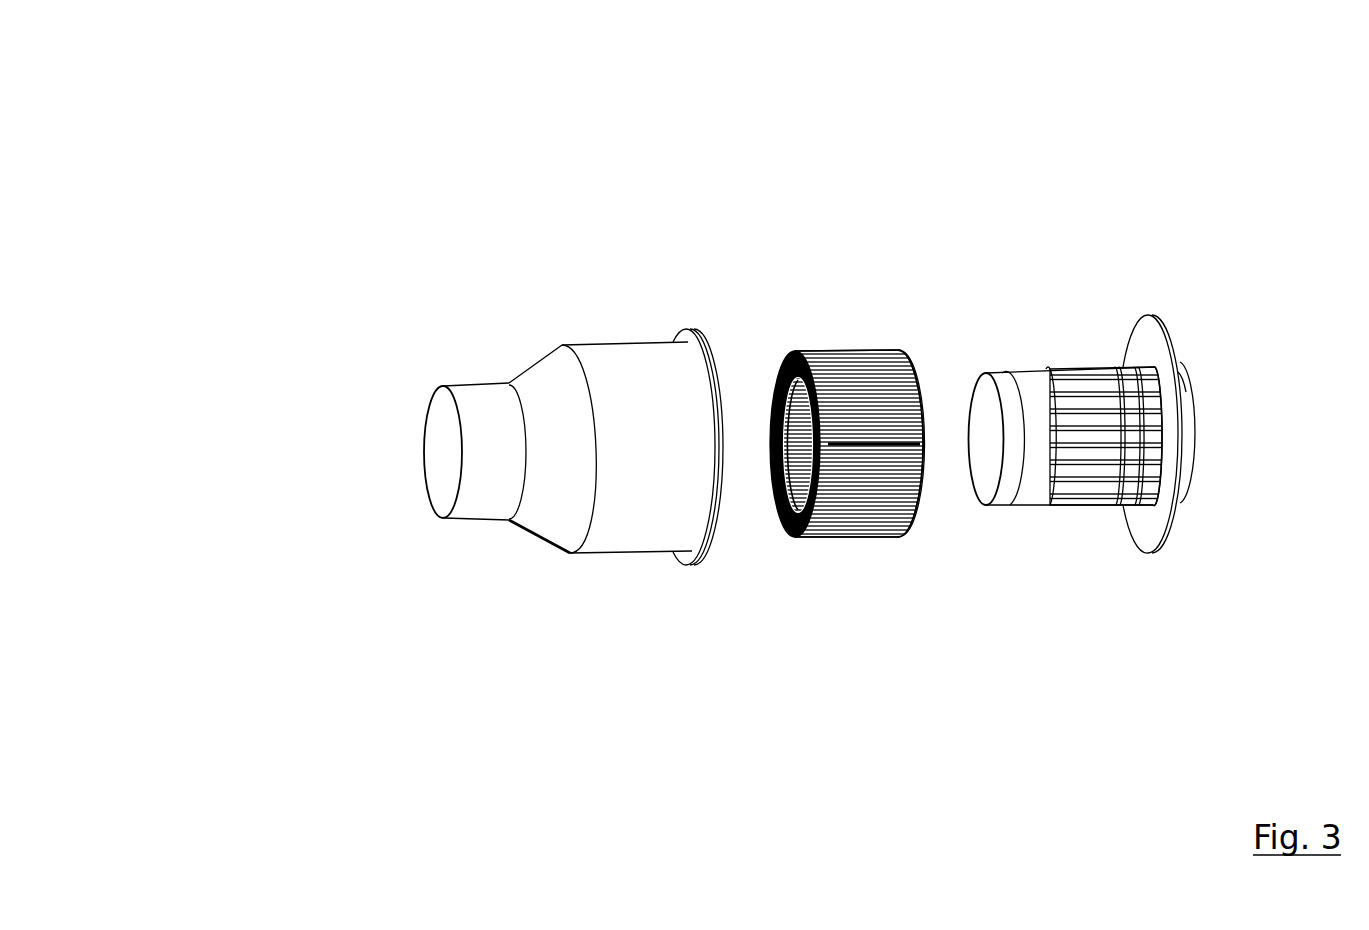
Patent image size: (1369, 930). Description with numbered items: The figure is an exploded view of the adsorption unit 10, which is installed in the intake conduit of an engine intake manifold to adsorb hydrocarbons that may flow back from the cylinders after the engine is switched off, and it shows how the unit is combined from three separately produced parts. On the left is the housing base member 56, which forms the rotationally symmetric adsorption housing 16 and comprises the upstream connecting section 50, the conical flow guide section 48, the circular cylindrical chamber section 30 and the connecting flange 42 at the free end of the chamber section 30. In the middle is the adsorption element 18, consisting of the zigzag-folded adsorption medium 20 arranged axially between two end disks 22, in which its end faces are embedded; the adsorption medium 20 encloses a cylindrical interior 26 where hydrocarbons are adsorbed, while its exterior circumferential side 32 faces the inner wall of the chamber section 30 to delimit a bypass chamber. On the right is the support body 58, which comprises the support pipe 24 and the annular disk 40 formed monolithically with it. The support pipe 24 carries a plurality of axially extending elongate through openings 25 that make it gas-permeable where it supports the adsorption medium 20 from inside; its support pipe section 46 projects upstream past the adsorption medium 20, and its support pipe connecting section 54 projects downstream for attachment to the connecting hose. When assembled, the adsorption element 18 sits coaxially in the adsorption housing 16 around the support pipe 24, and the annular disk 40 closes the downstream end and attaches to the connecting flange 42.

The adsorption unit 10 is at (214, 110).
The adsorption housing 16 is at (558, 307).
The adsorption element 18 is at (858, 330).
The adsorption medium 20 is at (822, 352).
The end disks 22 is at (805, 540).
The support pipe 24 is at (1098, 517).
The through openings 25 is at (1097, 405).
The interior 26 is at (783, 511).
The chamber section 30 is at (648, 362).
The exterior circumferential side 32 is at (858, 537).
The annular disk 40 is at (1170, 535).
The connecting flange 42 is at (688, 334).
The support pipe section 46 is at (1022, 378).
The flow guide section 48 is at (553, 516).
The connecting section 50 is at (466, 404).
The support pipe connecting section 54 is at (1183, 400).
The housing base member 56 is at (527, 353).
The support body 58 is at (1131, 328).